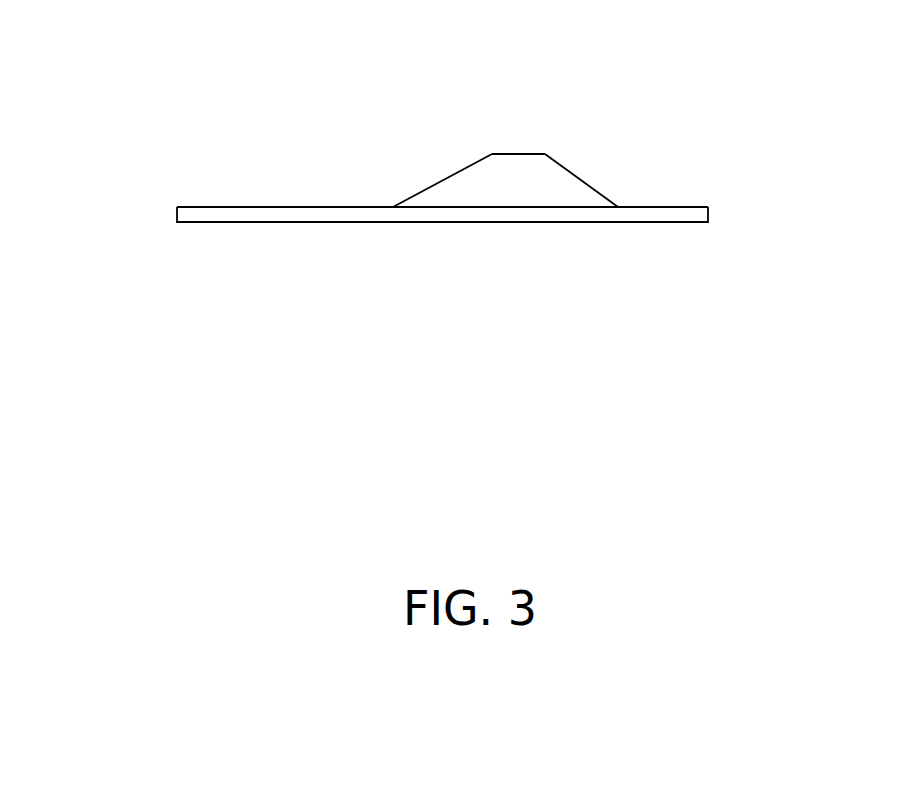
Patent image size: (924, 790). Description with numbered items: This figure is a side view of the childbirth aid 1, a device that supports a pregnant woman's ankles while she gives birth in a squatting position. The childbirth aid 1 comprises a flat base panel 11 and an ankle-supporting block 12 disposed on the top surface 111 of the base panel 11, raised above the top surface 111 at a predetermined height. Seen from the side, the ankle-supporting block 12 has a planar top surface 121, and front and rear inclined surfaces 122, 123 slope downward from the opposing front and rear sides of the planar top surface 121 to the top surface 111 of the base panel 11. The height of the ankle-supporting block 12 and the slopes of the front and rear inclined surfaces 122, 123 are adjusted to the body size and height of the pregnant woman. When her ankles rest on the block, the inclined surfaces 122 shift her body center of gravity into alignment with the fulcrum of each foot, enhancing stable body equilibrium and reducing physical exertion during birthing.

The childbirth aid 1 is at (718, 149).
The base panel 11 is at (710, 213).
The top surface 111 is at (635, 207).
The ankle-supporting block 12 is at (545, 192).
The planar top surface 121 is at (528, 154).
The front inclined surface 122 is at (437, 183).
The rear inclined surface 123 is at (572, 172).